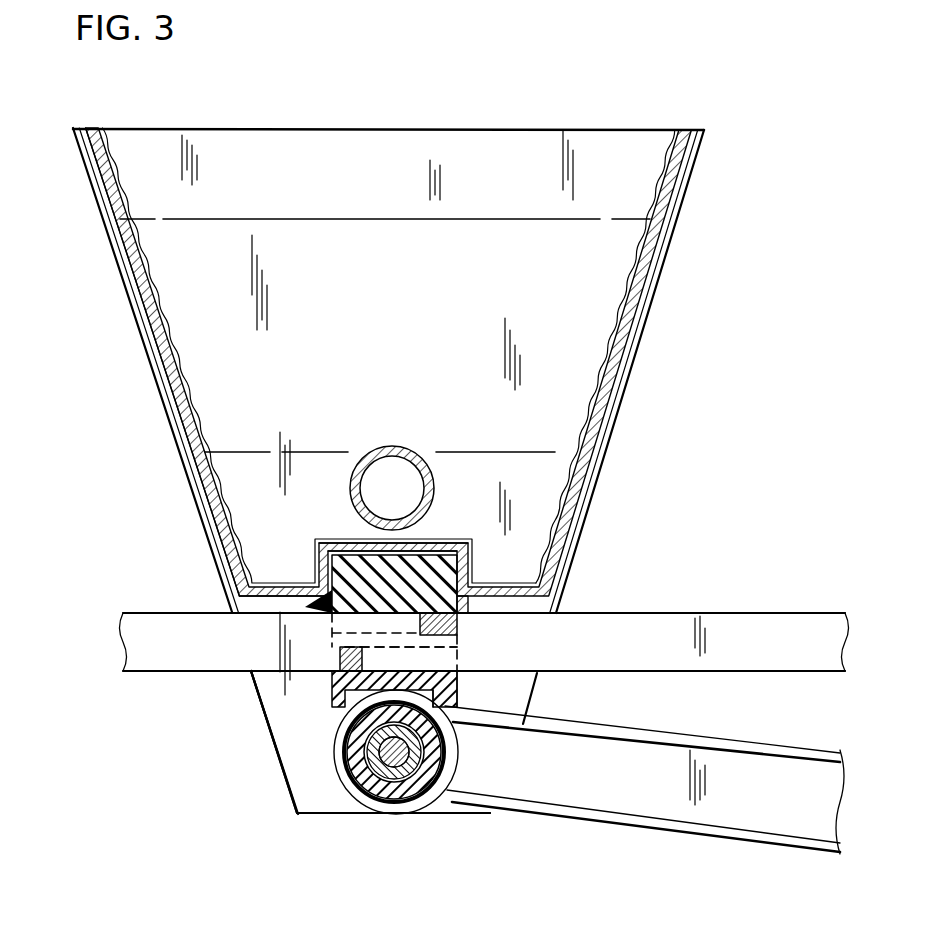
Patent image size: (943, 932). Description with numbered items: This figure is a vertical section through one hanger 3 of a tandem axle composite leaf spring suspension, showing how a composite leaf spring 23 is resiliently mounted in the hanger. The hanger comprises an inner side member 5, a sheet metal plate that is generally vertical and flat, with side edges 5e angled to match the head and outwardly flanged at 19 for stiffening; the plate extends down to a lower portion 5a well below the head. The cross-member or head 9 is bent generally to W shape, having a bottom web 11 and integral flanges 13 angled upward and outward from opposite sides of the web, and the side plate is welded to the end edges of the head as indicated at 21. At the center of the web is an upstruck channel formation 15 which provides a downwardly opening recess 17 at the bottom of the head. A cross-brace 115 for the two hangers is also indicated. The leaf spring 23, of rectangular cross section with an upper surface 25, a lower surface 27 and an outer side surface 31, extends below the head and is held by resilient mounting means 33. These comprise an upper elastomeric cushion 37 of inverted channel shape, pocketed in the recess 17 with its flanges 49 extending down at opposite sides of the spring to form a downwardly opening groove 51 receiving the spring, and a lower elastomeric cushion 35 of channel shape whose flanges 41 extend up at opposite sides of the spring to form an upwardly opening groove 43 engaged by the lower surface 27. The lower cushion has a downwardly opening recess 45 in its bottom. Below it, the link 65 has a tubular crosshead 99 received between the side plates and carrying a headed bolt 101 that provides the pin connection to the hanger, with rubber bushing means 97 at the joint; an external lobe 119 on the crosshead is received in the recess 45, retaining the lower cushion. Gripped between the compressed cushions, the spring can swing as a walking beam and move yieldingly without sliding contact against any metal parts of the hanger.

The hanger 3 is at (716, 125).
The inner side member 5 is at (307, 785).
The lower portion of inner side plate 5a is at (322, 815).
The side edge of side plate 5e is at (197, 507).
The cross-member or head 9 is at (132, 317).
The bottom web 11 is at (234, 588).
The flange of head 13 is at (636, 333).
The channel formation 15 is at (338, 556).
The recess or groove 17 is at (450, 556).
The stiffening flange 19 is at (615, 157).
The weld 21 is at (99, 180).
The composite leaf spring 23 is at (790, 609).
The upper surface 25 is at (716, 612).
The lower surface 27 is at (772, 673).
The outer side surface 31 is at (654, 684).
The resilient mounting means 33 is at (271, 689).
The lower elastomeric cushion 35 is at (482, 690).
The upper elastomeric cushion 37 is at (300, 614).
The flange of lower cushion 41 is at (333, 663).
The upwardly opening groove 43 is at (345, 645).
The downwardly opening recess 45 is at (345, 722).
The flange of upper cushion 49 is at (460, 622).
The downwardly opening groove 51 is at (452, 666).
The link 65 is at (652, 836).
The rubber bushing means 97 is at (445, 822).
The tubular crosshead 99 is at (398, 812).
The headed bolt 101 is at (425, 766).
The cross-brace 115 is at (400, 445).
The external projection or lobe 119 is at (458, 710).